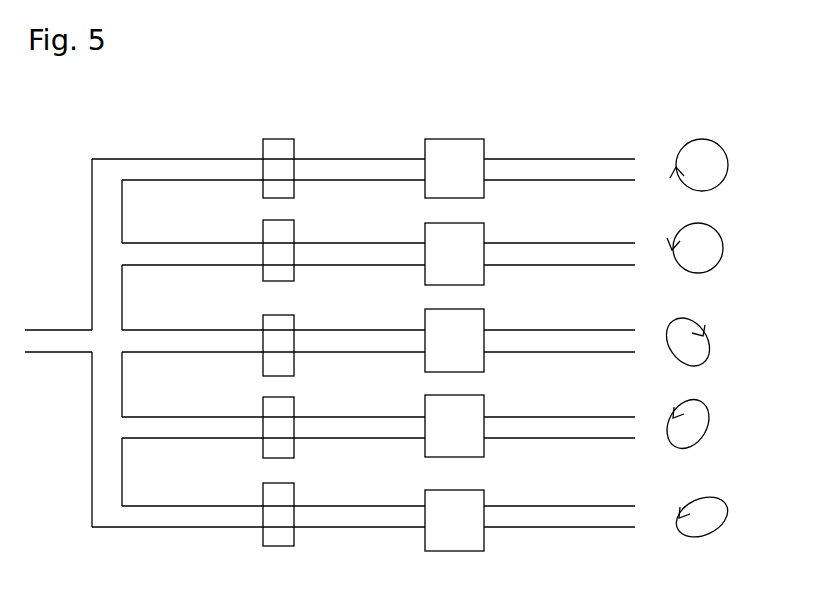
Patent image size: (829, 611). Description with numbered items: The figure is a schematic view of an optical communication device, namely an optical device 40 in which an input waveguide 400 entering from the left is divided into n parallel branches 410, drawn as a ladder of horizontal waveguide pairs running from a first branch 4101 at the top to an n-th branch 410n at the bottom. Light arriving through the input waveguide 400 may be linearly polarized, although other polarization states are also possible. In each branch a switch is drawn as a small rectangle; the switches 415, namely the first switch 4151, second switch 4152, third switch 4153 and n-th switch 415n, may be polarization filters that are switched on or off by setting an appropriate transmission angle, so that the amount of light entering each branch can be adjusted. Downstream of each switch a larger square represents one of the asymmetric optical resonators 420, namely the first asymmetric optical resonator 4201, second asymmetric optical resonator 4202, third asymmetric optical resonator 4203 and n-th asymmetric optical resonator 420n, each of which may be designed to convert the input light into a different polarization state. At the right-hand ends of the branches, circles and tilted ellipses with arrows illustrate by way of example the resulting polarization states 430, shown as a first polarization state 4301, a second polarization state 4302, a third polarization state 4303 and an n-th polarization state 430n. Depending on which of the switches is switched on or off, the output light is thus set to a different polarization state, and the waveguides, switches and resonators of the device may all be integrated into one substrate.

The input waveguide 400 is at (68, 340).
The optical device 40 is at (122, 168).
The branches 410 is at (363, 338).
The first branch 4101 is at (250, 158).
The n-th branch 410n is at (178, 517).
The switches 415 is at (321, 308).
The first switch 4151 is at (280, 138).
The second switch 4152 is at (283, 233).
The third switch 4153 is at (288, 323).
The n-th switch 415n is at (287, 495).
The asymmetric optical resonators 420 is at (485, 310).
The first asymmetric optical resonator 4201 is at (453, 152).
The second asymmetric optical resonator 4202 is at (462, 243).
The third asymmetric optical resonator 4203 is at (462, 330).
The n-th asymmetric optical resonator 420n is at (465, 505).
The polarization states 430 is at (728, 310).
The first polarization state 4301 is at (722, 141).
The second polarization state 4302 is at (717, 231).
The third polarization state 4303 is at (688, 318).
The n-th polarization state 430n is at (690, 500).